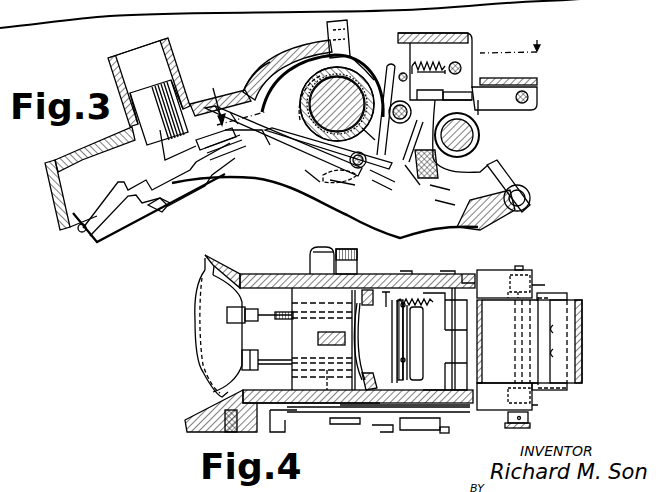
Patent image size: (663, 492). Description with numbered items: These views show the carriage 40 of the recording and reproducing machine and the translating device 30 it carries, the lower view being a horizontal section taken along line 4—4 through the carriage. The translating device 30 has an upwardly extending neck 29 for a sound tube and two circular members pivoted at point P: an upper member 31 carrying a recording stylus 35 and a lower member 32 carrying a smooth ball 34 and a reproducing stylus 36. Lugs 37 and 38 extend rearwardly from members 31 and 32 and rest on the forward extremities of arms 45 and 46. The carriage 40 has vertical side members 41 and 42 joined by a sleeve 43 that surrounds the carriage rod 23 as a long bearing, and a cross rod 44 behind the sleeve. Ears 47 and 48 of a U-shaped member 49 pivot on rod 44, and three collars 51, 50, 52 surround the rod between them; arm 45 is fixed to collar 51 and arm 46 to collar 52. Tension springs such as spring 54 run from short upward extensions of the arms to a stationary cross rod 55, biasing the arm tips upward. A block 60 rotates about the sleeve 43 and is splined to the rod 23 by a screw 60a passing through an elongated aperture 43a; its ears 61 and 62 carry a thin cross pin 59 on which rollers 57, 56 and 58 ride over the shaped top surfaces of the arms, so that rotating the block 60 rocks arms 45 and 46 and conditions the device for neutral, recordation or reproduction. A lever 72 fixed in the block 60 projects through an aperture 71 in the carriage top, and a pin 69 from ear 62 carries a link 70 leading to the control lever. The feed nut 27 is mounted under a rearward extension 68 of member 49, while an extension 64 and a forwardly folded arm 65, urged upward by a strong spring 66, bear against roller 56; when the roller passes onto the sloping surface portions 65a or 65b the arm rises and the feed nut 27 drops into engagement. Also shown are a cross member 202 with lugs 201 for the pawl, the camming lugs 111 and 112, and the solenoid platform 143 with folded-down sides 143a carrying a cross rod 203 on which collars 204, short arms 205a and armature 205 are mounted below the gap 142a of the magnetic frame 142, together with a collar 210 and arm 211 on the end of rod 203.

In FIG. 3, the neck 29 is at (126, 60).
In FIG. 3, the translating device 30 is at (78, 150).
In FIG. 3, the upper circular member 31 is at (143, 185).
In FIG. 3, the pivot point P is at (81, 233).
In FIG. 3, the reproducing stylus 36 is at (157, 212).
In FIG. 3, the lower circular member 32 is at (222, 165).
In FIG. 3, the smooth ball 34 is at (226, 172).
In FIG. 3, the recording stylus 35 is at (227, 178).
In FIG. 3, the section line 4— 4 is at (373, 73).
In FIG. 3, the carriage 40 is at (285, 50).
In FIG. 3, the lug 37 is at (265, 80).
In FIG. 3, the aperture 71 is at (306, 48).
In FIG. 3, the lever 72 is at (328, 29).
In FIG. 4, the lever 72 is at (318, 338).
In FIG. 3, the sleeve 43 is at (340, 78).
In FIG. 4, the sleeve 43 is at (315, 262).
In FIG. 3, the elongated aperture 43a is at (322, 92).
In FIG. 3, the centrally apertured block 60 is at (360, 70).
In FIG. 4, the centrally apertured block 60 is at (320, 294).
In FIG. 3, the screw 60a is at (396, 104).
In FIG. 3, the arm 45 is at (272, 100).
In FIG. 4, the arm 45 is at (278, 312).
In FIG. 3, the lug 38 is at (268, 140).
In FIG. 3, the arm 46 is at (295, 150).
In FIG. 4, the arm 46 is at (275, 362).
In FIG. 3, the forward top surface portion 65b is at (332, 177).
In FIG. 3, the roller 58 is at (355, 157).
In FIG. 4, the roller 58 is at (365, 372).
In FIG. 3, the lefthand ear 61 is at (367, 132).
In FIG. 4, the lefthand ear 61 is at (367, 290).
In FIG. 3, the cross rod 44 is at (392, 125).
In FIG. 3, the thin cross pin 59 is at (386, 178).
In FIG. 3, the strong spring 66 is at (421, 67).
In FIG. 3, the tension spring 54 is at (428, 73).
In FIG. 3, the stationary cross rod 55 is at (462, 68).
In FIG. 3, the horizontal rearward extension 68 is at (474, 97).
In FIG. 3, the platform 143 is at (538, 81).
In FIG. 4, the platform 143 is at (487, 275).
In FIG. 3, the folded-down sides 143a is at (529, 97).
In FIG. 3, the rotatable cross rod 203 is at (531, 106).
In FIG. 4, the rotatable cross rod 203 is at (522, 268).
In FIG. 3, the feed nut 27 is at (480, 113).
In FIG. 3, the extension 64 is at (470, 165).
In FIG. 3, the arm 65 is at (432, 170).
In FIG. 3, the vertical side member 41 is at (492, 180).
In FIG. 4, the vertical side member 41 is at (283, 270).
In FIG. 3, the rearward top surface portion 65a is at (440, 192).
In FIG. 3, the lugs 201 is at (528, 196).
In FIG. 3, the cross member 202 is at (528, 208).
In FIG. 4, the carriage rod 23 is at (316, 245).
In FIG. 4, the ear 47 is at (390, 272).
In FIG. 4, the vertical side member 42 is at (282, 393).
In FIG. 4, the roller 57 is at (362, 322).
In FIG. 4, the third roller 56 is at (362, 345).
In FIG. 4, the lefthand collar 51 is at (410, 312).
In FIG. 4, the collar 50 is at (418, 330).
In FIG. 4, the righthand collar 52 is at (416, 376).
In FIG. 4, the U-shaped member 49 is at (466, 327).
In FIG. 4, the camming lug 112 is at (449, 430).
In FIG. 4, the righthand ear 62 is at (360, 395).
In FIG. 4, the camming lug 111 is at (385, 433).
In FIG. 4, the ear 48 is at (402, 431).
In FIG. 4, the link 70 is at (290, 422).
In FIG. 4, the pin 69 is at (343, 425).
In FIG. 4, the collars 204 is at (545, 285).
In FIG. 4, the short arms 205a is at (560, 295).
In FIG. 4, the armature 205 is at (553, 328).
In FIG. 4, the magnetic frame 142 is at (583, 345).
In FIG. 4, the gap 142a is at (553, 353).
In FIG. 4, the collar 210 is at (530, 418).
In FIG. 4, the arm 211 is at (531, 426).